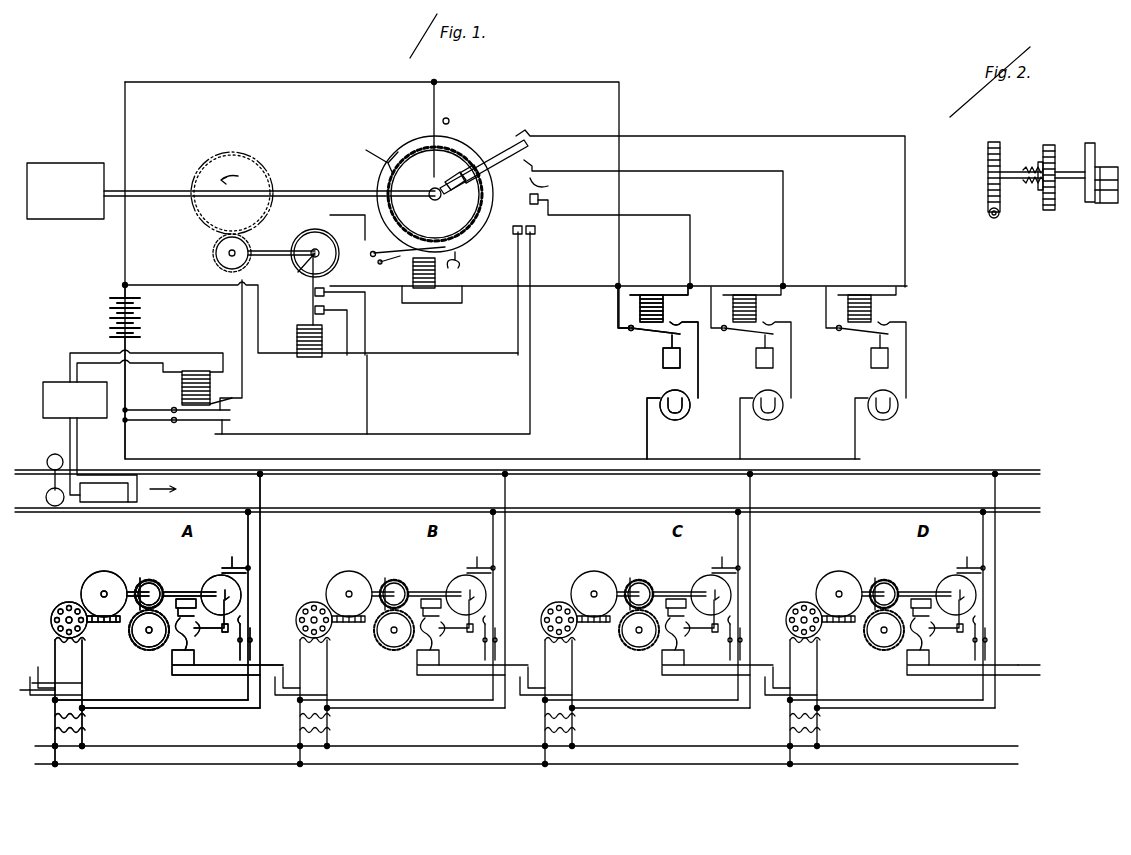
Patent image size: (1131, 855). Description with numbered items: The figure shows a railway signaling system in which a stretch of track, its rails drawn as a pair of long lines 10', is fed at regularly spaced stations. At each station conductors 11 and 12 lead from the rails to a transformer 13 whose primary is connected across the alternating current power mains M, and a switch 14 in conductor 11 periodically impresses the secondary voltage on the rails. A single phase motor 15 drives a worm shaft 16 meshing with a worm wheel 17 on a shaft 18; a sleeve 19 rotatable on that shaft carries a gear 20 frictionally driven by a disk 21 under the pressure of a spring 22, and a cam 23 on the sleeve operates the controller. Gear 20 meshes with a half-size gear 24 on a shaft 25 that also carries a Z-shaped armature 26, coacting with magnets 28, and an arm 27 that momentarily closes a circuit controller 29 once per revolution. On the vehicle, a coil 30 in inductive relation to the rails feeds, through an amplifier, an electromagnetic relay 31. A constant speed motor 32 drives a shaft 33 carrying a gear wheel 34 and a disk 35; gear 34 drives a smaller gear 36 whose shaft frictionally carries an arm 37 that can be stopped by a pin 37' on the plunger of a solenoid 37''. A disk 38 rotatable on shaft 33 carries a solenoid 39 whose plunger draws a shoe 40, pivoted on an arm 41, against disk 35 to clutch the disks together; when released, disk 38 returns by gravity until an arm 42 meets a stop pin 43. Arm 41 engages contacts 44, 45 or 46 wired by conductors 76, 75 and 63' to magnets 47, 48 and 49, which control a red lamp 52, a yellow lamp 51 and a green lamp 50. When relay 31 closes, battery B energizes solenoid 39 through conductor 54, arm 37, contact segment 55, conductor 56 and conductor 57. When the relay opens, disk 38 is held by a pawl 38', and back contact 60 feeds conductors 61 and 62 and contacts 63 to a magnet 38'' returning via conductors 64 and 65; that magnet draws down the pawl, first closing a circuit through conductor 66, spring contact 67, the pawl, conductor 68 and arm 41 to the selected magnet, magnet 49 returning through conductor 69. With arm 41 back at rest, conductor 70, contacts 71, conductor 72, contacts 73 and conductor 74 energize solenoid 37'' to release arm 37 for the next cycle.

In FIG. 1, the main line conductor 10' is at (527, 484).
In FIG. 1, the conductor 11 is at (246, 530).
In FIG. 1, the conductor 12 is at (262, 530).
In FIG. 1, the transformer 13 is at (84, 720).
In FIG. 1, the switch 14 is at (228, 557).
In FIG. 1, the single phase motor 15 is at (50, 630).
In FIG. 1, the worm shaft 16 is at (108, 624).
In FIG. 1, the worm wheel 17 is at (85, 582).
In FIG. 2, the worm wheel 17 is at (988, 158).
In FIG. 1, the shaft 18 is at (132, 578).
In FIG. 2, the shaft 18 is at (1008, 170).
In FIG. 1, the sleeve 19 is at (176, 590).
In FIG. 2, the sleeve 19 is at (1070, 178).
In FIG. 1, the gear 20 is at (154, 580).
In FIG. 2, the gear 20 is at (1052, 212).
In FIG. 1, the disk 21 is at (142, 576).
In FIG. 2, the disk 21 is at (1040, 192).
In FIG. 2, the spring 22 is at (1033, 165).
In FIG. 1, the cam 23 is at (242, 590).
In FIG. 2, the cam 23 is at (1092, 204).
In FIG. 1, the gear 24 is at (136, 640).
In FIG. 1, the shaft 25 is at (182, 616).
In FIG. 1, the Z-shaped armature 26 is at (190, 642).
In FIG. 1, the arm 27 is at (232, 622).
In FIG. 1, the magnets 28 is at (172, 652).
In FIG. 1, the circuit controller 29 is at (258, 628).
In FIG. 1, the coil 30 is at (98, 502).
In FIG. 1, the electromagnetic relay 31 is at (192, 370).
In FIG. 1, the constant speed motor 32 is at (70, 220).
In FIG. 1, the shaft 33 is at (148, 190).
In FIG. 1, the gear wheel 34 is at (250, 160).
In FIG. 1, the disk 35 is at (410, 150).
In FIG. 1, the gear 36 is at (212, 252).
In FIG. 1, the arm 37 is at (318, 304).
In FIG. 1, the pin 37' is at (304, 330).
In FIG. 1, the solenoid 37'' is at (316, 354).
In FIG. 1, the disk 38 is at (447, 202).
In FIG. 1, the pawl 38' is at (408, 265).
In FIG. 1, the magnet 38'' is at (432, 296).
In FIG. 1, the solenoid 39 is at (452, 170).
In FIG. 1, the shoe 40 is at (649, 220).
In FIG. 1, the arm 41 is at (500, 140).
In FIG. 1, the arm 42 is at (362, 152).
In FIG. 1, the stop pin 43 is at (447, 118).
In FIG. 1, the contact 44 is at (542, 212).
In FIG. 1, the contact 45 is at (551, 186).
In FIG. 1, the contact 46 is at (522, 136).
In FIG. 1, the magnet 47 is at (650, 294).
In FIG. 1, the magnet 48 is at (742, 294).
In FIG. 1, the magnet 49 is at (862, 294).
In FIG. 1, the green lamp 50 is at (904, 408).
In FIG. 1, the yellow lamp 51 is at (784, 408).
In FIG. 1, the red lamp 52 is at (690, 412).
In FIG. 1, the conductor 54 is at (242, 382).
In FIG. 1, the contact segment 55 is at (310, 232).
In FIG. 1, the conductor 56 is at (350, 191).
In FIG. 1, the conductor 57 is at (432, 100).
In FIG. 1, the back contact 60 is at (210, 428).
In FIG. 1, the conductor 61 is at (322, 434).
In FIG. 1, the conductor 62 is at (368, 392).
In FIG. 1, the contacts 63 is at (474, 274).
In FIG. 1, the conductor 63' is at (817, 116).
In FIG. 1, the conductor 64 is at (598, 288).
In FIG. 1, the conductor 65 is at (619, 152).
In FIG. 1, the conductor 66 is at (463, 302).
In FIG. 1, the spring contact 67 is at (460, 264).
In FIG. 1, the conductor 68 is at (378, 232).
In FIG. 1, the conductor 69 is at (827, 286).
In FIG. 1, the conductor 70 is at (532, 360).
In FIG. 1, the contacts 71 is at (513, 228).
In FIG. 1, the conductor 72 is at (474, 357).
In FIG. 1, the contacts 73 is at (355, 313).
In FIG. 1, the conductor 74 is at (240, 298).
In FIG. 1, the conductor 75 is at (722, 172).
In FIG. 1, the conductor 76 is at (670, 215).
In FIG. 1, the battery B is at (108, 311).
In FIG. 1, the alternating current power mains M is at (178, 762).